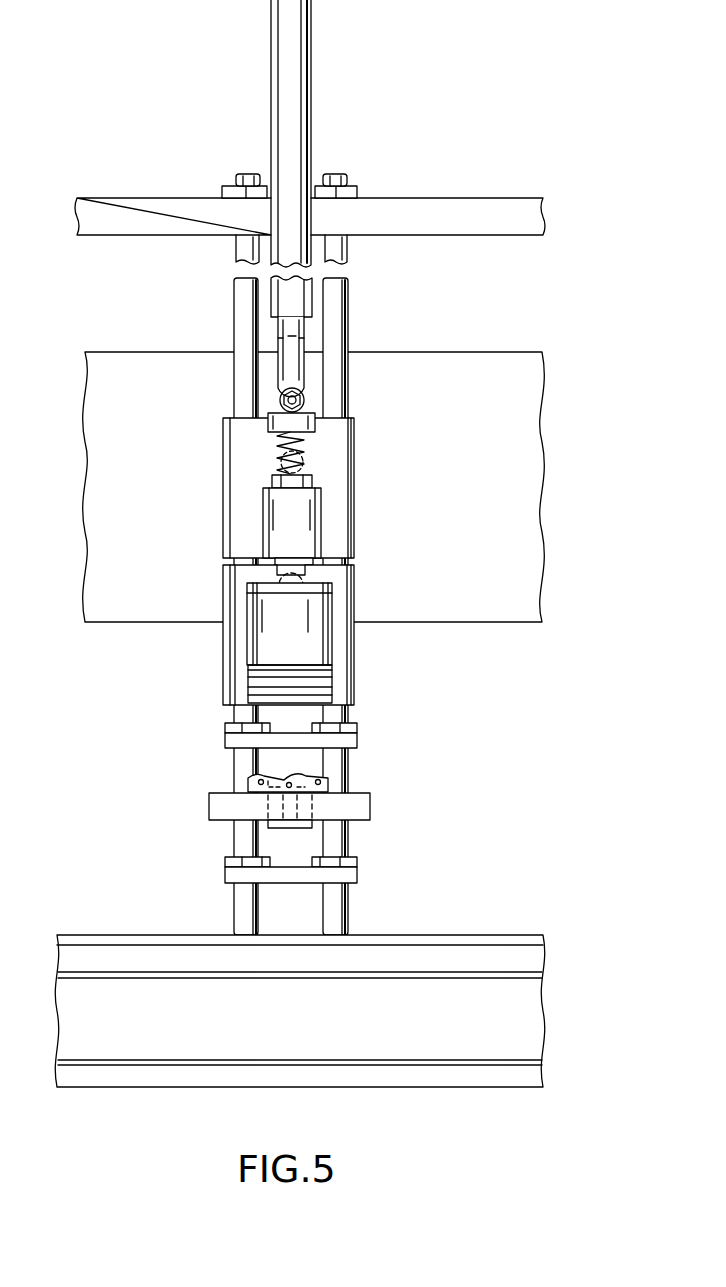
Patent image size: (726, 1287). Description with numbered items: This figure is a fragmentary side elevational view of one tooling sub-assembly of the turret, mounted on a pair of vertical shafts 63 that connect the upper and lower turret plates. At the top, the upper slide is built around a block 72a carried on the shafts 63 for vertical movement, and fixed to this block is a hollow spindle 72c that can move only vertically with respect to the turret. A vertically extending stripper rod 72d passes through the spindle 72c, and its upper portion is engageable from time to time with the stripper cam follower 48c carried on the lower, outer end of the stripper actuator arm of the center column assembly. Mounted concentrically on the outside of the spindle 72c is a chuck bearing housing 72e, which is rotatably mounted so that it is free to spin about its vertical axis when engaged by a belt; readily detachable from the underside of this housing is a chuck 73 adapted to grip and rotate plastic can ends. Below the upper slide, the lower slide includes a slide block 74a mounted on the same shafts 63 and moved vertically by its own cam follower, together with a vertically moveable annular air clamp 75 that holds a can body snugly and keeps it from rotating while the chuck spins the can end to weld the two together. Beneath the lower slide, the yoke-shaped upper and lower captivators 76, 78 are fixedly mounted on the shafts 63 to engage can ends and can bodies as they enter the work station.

The vertical shafts 63 is at (237, 307).
The stripper cam follower 48c is at (305, 403).
The block 72a is at (364, 488).
The hollow spindle 72c is at (302, 520).
The stripper rod 72d is at (302, 462).
The chuck bearing housing 72e is at (298, 623).
The slide block 74a is at (364, 682).
The upper captivator 76 is at (356, 742).
The chuck 73 is at (333, 785).
The annular air clamp 75 is at (358, 807).
The lower captivator 78 is at (352, 875).